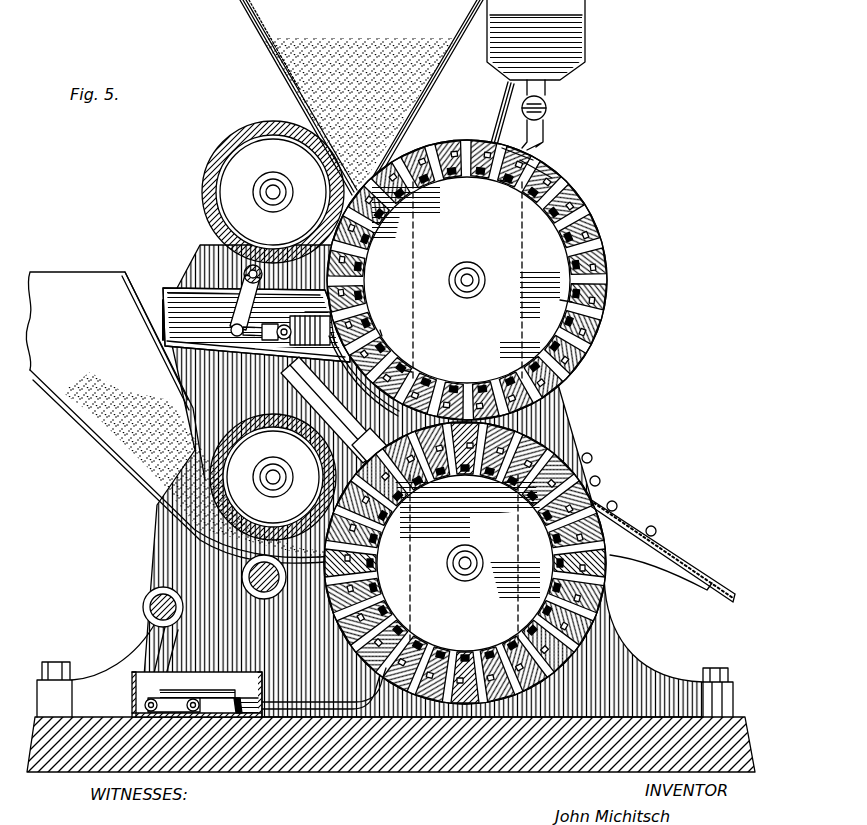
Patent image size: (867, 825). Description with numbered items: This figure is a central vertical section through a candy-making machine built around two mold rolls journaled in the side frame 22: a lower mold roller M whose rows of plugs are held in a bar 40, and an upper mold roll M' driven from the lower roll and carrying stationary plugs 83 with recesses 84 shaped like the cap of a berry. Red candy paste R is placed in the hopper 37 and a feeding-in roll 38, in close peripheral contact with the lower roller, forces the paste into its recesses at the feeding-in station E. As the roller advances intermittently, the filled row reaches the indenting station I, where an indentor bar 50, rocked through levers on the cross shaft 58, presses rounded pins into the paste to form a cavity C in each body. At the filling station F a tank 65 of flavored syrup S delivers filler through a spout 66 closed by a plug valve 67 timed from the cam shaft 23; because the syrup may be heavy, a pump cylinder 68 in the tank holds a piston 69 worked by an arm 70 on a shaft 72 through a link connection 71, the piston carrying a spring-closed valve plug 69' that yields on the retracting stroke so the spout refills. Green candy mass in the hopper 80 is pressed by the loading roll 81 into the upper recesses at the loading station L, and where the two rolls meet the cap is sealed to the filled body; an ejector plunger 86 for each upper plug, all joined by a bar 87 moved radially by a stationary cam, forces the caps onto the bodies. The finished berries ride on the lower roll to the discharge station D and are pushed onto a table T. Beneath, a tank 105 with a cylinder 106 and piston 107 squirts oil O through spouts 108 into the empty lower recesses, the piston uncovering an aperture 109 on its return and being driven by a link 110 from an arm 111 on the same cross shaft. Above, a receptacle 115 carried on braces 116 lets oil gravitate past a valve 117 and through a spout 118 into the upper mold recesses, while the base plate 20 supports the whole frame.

The base plate 20 is at (452, 772).
The side frame 22 is at (655, 678).
The cam shaft 23 is at (255, 590).
The reservoir or hopper 37 is at (70, 280).
The feeding-in roll 38 is at (182, 498).
The bar 40 is at (580, 460).
The indentor bar 50 is at (285, 430).
The cross shaft 58 is at (160, 612).
The tank 65 is at (172, 296).
The spout 66 is at (382, 333).
The valve 67 is at (404, 372).
The cylinder 68 is at (302, 312).
The piston 69 is at (295, 284).
The valve plug 69' is at (310, 410).
The arm 70 is at (240, 293).
The link connection 71 is at (245, 332).
The shaft 72 is at (245, 272).
The hopper 80 is at (262, 26).
The feeding-in or loading roll 81 is at (216, 150).
The plugs 83 is at (548, 170).
The recesses 84 is at (560, 185).
The plunger 86 is at (548, 360).
The bar 87 is at (540, 180).
The tank 105 is at (200, 695).
The cylinder 106 is at (175, 690).
The piston 107 is at (216, 690).
The spouts 108 is at (328, 712).
The aperture 109 is at (238, 713).
The link 110 is at (175, 712).
The arm 111 is at (147, 672).
The receptacle 115 is at (586, 46).
The braces 116 is at (500, 108).
The valve 117 is at (548, 108).
The spout 118 is at (546, 131).
The cavity C is at (370, 446).
The discharge station D is at (600, 477).
The feeding-in station E is at (332, 500).
The filling station F is at (443, 385).
The hopper G is at (285, 73).
The indenting station I is at (328, 460).
The loading station L is at (330, 195).
The lower mold roller M is at (487, 563).
The upper mold roll M' is at (494, 280).
The oil O is at (250, 710).
The red candy paste R is at (105, 388).
The syrup S is at (178, 290).
The table T is at (690, 565).